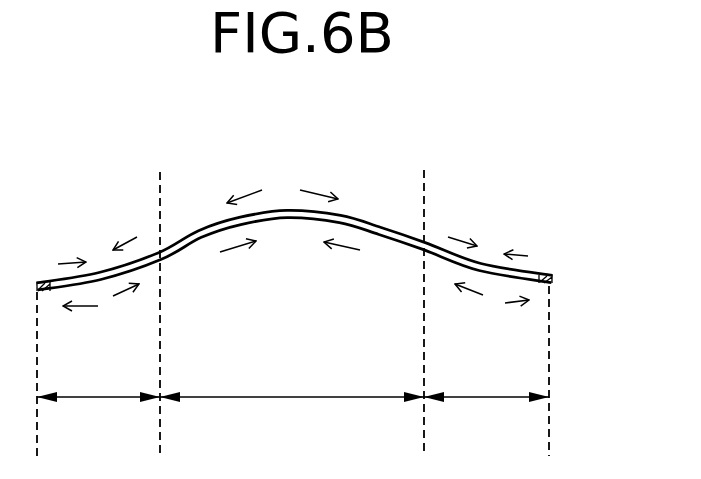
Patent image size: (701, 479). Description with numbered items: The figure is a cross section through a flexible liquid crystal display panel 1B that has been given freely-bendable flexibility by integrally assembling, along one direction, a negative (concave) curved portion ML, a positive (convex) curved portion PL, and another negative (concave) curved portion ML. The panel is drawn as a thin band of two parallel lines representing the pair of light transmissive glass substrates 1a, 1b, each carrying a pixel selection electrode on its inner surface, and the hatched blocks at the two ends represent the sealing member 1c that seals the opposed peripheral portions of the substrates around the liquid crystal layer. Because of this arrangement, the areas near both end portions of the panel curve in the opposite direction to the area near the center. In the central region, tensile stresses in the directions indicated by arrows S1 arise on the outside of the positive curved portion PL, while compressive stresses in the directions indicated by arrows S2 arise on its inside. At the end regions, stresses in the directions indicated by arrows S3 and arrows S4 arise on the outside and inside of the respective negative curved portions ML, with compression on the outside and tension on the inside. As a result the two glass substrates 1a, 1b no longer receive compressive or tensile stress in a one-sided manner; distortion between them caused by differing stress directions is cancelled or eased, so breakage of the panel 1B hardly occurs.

The liquid crystal display panel 1B is at (378, 202).
The glass substrate 1a is at (235, 294).
The glass substrate 1b is at (237, 318).
The sealing member 1c is at (553, 279).
The arrows indicating tensile stress directions S1 is at (321, 188).
The arrows indicating compressive stress directions S2 is at (240, 243).
The arrows indicating stress directions at the negative curved portions S3 is at (127, 240).
The arrows indicating stress directions at the negative curved portions S4 is at (121, 297).
The negative (concave) curved portion ML is at (293, 381).
The positive (convex) curved portion PL is at (292, 381).